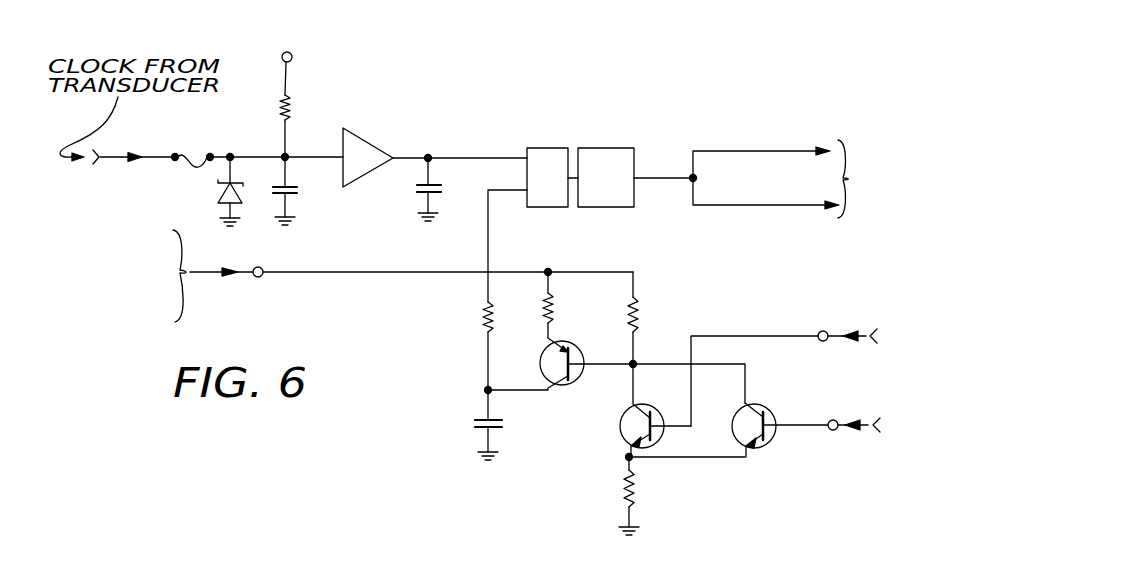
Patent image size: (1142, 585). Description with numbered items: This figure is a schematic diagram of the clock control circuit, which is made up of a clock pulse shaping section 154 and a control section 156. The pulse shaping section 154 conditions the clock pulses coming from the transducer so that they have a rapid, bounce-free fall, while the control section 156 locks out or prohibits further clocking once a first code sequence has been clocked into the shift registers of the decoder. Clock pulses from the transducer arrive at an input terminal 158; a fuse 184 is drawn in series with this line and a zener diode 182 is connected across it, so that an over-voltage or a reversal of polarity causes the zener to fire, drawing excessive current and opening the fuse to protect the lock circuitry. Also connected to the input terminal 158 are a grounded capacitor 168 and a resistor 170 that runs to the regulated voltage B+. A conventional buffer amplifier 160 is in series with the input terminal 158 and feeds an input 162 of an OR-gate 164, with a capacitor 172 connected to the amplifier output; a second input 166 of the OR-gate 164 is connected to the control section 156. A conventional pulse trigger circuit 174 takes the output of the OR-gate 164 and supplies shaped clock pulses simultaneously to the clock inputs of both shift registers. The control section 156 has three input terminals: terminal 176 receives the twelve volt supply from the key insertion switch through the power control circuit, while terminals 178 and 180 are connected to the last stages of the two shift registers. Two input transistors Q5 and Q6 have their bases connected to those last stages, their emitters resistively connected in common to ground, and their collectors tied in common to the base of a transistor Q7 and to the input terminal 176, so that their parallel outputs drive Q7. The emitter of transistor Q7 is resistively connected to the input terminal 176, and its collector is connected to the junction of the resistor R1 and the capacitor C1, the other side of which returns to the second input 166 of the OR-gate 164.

The clock pulse shaping section 154 is at (635, 137).
The control section 156 is at (650, 321).
The input terminal 158 is at (285, 153).
The buffer amplifier 160 is at (370, 142).
The input of OR-gate 162 is at (487, 157).
The OR-gate 164 is at (550, 148).
The second input 166 is at (507, 192).
The grounded capacitor 168 is at (297, 197).
The resistor 170 is at (290, 99).
The capacitor 172 is at (437, 195).
The pulse trigger circuit 174 is at (607, 207).
The input terminal 176 is at (257, 278).
The input terminal 178 is at (822, 331).
The input terminal 180 is at (832, 431).
The zener diode 182 is at (217, 194).
The fuse 184 is at (197, 152).
The resistor R1 is at (493, 313).
The capacitor C1 is at (493, 430).
The transistor Q7 is at (562, 385).
The input transistor Q6 is at (664, 438).
The input transistor Q5 is at (763, 450).